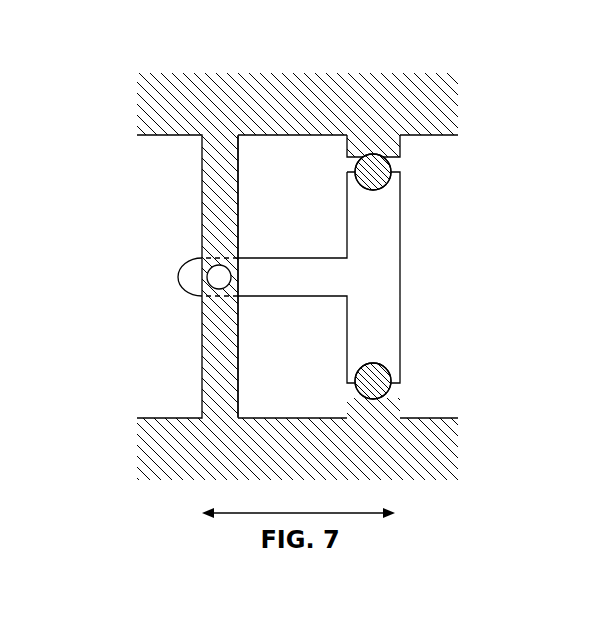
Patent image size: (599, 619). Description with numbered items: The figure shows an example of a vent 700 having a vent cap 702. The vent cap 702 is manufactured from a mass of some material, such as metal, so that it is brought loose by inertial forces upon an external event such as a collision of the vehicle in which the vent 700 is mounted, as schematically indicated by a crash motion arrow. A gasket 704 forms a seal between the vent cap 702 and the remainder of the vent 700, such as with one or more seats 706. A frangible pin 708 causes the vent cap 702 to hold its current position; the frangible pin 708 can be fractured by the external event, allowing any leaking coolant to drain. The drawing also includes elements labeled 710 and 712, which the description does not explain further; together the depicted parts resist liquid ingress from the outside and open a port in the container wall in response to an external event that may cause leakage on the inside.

The vent 700 is at (94, 54).
The vent cap 702 is at (400, 268).
The gasket 704 is at (389, 390).
The seat 706 is at (404, 145).
The frangible pin 708 is at (300, 512).
The detent ball 710 is at (241, 280).
The wall 712 is at (238, 168).